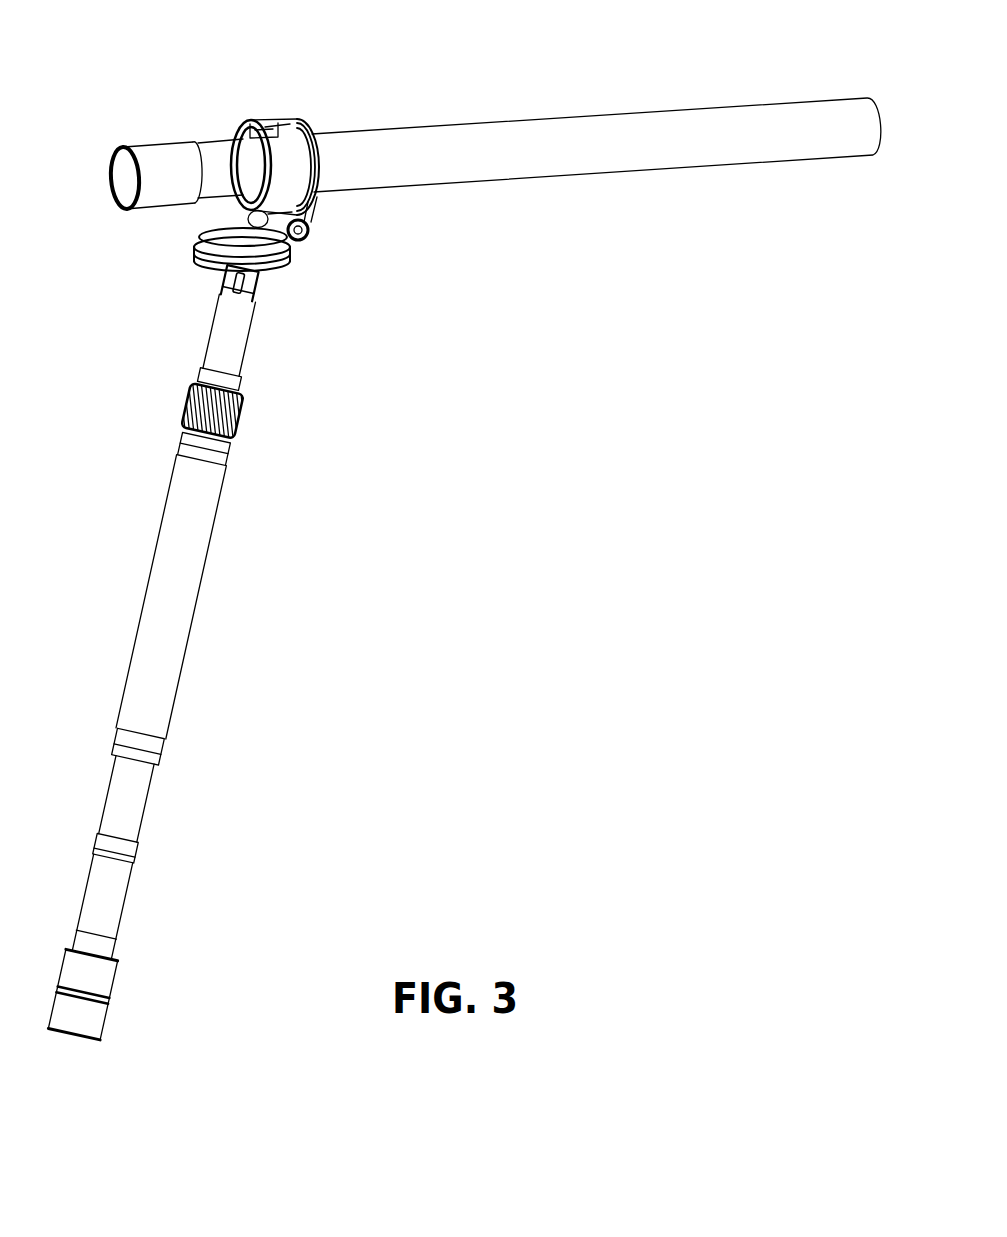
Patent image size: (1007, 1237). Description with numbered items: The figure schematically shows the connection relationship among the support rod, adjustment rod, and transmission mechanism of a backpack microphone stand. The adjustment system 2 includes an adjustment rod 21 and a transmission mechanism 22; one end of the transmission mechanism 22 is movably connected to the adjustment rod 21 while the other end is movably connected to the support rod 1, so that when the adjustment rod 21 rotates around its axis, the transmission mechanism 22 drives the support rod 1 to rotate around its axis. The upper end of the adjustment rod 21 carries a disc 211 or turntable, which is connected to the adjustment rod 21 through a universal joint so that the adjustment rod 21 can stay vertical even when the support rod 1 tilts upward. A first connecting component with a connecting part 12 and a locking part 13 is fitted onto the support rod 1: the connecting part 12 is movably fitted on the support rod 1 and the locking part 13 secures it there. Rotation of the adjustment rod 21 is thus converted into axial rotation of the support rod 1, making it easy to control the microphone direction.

The support rod 1 is at (568, 145).
The adjustment system 2 is at (244, 536).
The connecting part 12 is at (306, 128).
The locking part 13 is at (265, 140).
The adjustment rod 21 is at (188, 485).
The disc 211 is at (200, 232).
The transmission mechanism 22 is at (305, 243).